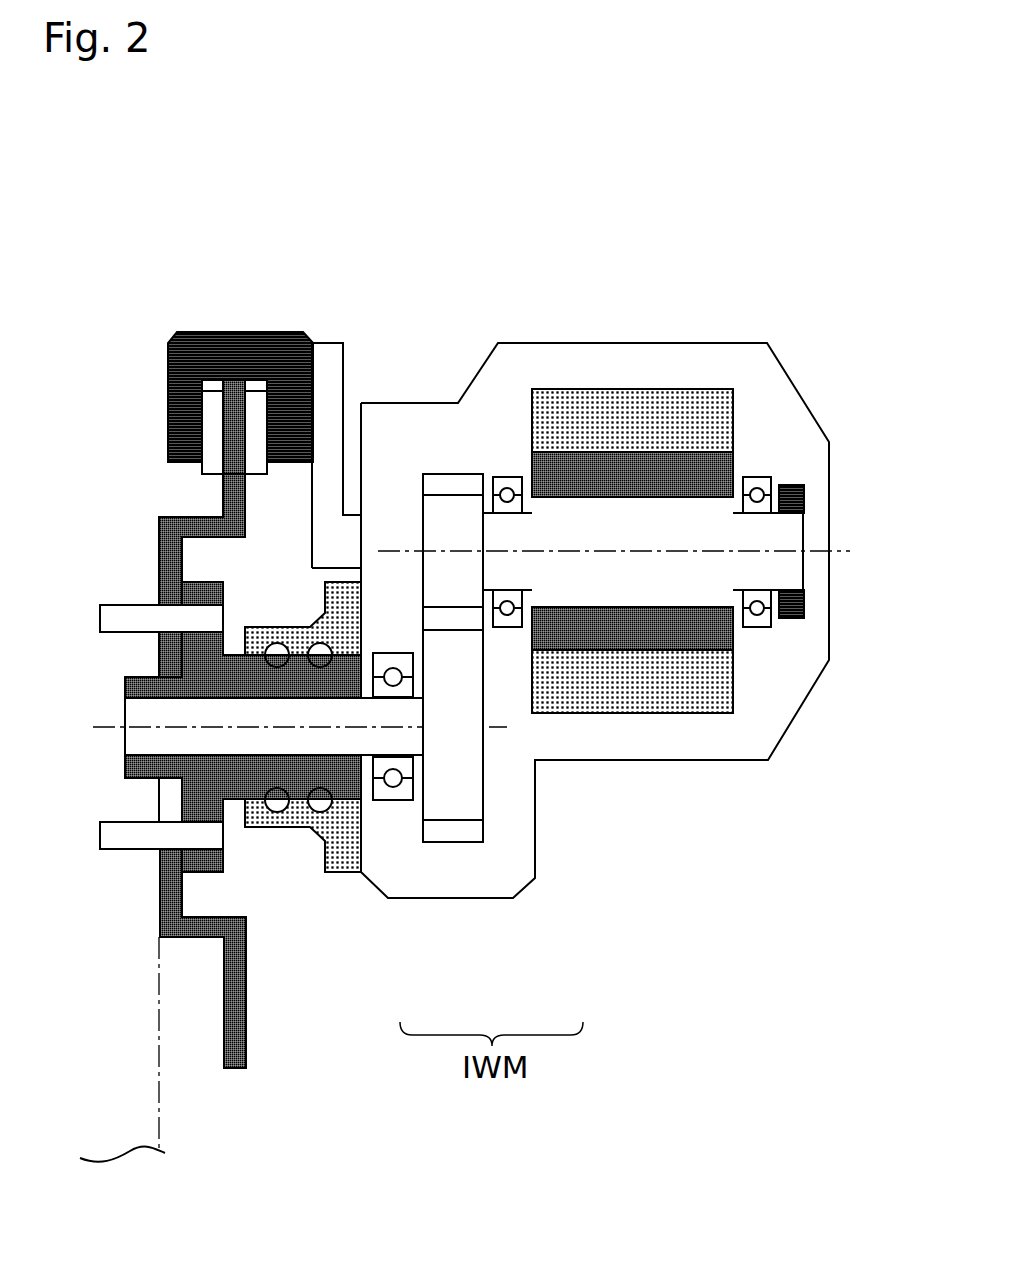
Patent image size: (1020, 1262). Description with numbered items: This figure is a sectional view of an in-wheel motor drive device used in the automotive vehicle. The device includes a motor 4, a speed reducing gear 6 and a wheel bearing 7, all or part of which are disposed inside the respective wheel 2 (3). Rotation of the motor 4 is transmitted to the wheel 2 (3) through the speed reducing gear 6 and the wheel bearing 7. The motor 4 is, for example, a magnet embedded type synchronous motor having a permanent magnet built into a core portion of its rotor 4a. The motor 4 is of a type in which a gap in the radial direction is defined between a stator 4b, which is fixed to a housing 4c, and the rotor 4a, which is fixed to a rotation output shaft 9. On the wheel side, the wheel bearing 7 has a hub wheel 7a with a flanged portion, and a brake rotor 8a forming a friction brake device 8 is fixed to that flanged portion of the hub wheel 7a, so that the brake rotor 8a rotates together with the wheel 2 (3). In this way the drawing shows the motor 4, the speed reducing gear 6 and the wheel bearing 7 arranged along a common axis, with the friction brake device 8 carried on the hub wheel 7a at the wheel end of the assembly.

The wheel 2 is at (185, 1005).
The wheel 3 is at (142, 1078).
The motor 4 is at (639, 634).
The rotor 4a is at (718, 475).
The stator 4b is at (677, 420).
The housing 4c is at (778, 689).
The speed reducing gear 6 is at (460, 850).
The wheel bearing 7 is at (285, 830).
The hub wheel 7a is at (148, 682).
The friction brake device 8 is at (195, 322).
The brake rotor 8a is at (175, 542).
The rotation output shaft 9 is at (572, 517).